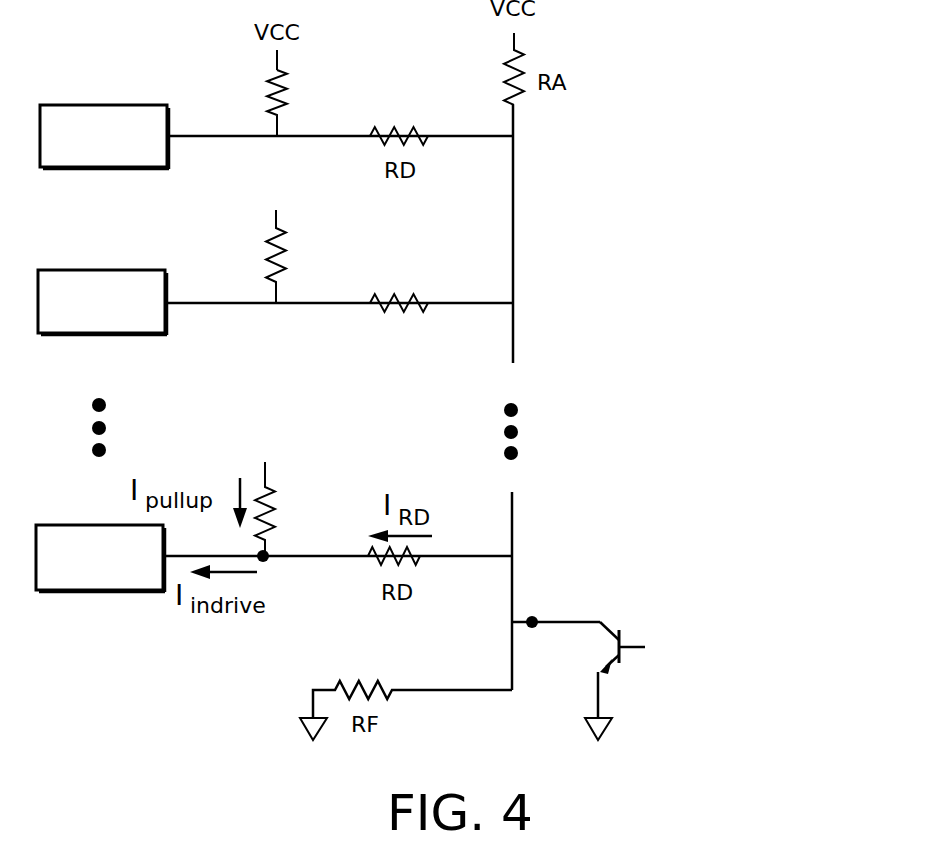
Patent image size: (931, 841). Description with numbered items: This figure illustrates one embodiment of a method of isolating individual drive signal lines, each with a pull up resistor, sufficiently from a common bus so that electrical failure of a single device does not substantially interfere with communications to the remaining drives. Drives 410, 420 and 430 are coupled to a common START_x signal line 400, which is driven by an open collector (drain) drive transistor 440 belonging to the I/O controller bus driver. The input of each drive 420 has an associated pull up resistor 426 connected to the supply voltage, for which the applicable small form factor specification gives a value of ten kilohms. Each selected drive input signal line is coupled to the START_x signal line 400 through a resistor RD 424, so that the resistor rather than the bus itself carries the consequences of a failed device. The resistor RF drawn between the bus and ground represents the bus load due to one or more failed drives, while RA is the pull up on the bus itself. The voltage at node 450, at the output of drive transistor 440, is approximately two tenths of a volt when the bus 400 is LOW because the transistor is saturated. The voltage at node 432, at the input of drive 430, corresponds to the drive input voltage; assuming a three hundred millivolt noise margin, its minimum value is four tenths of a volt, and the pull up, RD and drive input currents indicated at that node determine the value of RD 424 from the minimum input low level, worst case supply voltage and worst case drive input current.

The START_x signal line 400 is at (514, 260).
The drive 410 is at (115, 104).
The drive 420 is at (112, 269).
The resistor RD 424 is at (399, 335).
The pull up resistor 426 is at (303, 260).
The drive 430 is at (115, 592).
The node 432 is at (277, 548).
The drive transistor 440 is at (632, 657).
The node 450 is at (535, 612).